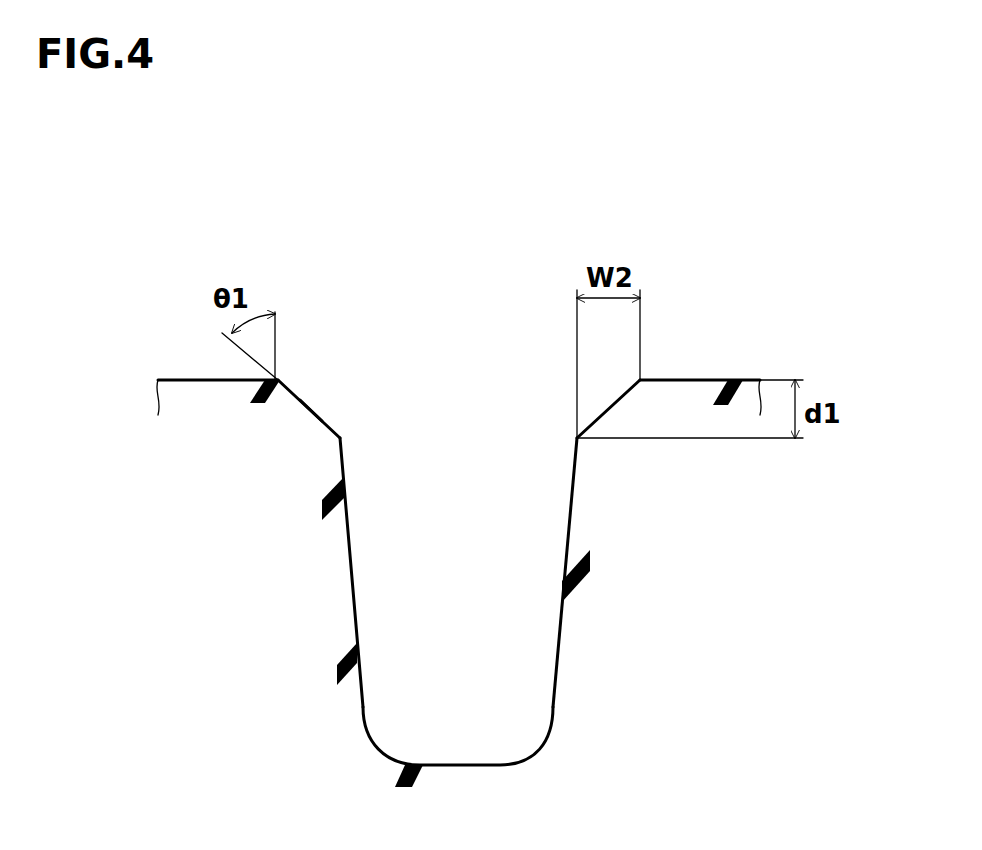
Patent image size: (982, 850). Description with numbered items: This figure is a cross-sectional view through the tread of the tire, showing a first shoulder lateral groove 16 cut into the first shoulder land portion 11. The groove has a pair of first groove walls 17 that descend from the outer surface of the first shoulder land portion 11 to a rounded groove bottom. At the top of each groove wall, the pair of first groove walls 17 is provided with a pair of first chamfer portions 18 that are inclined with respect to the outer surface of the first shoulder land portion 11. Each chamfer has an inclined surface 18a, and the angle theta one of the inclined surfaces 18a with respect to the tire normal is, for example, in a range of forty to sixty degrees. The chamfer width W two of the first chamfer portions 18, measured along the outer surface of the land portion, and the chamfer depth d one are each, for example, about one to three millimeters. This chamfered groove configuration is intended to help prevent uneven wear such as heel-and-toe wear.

The first shoulder land portion 11 is at (692, 380).
The first shoulder lateral groove 16 is at (458, 471).
The first groove walls 17 is at (350, 537).
The first chamfer portions 18 is at (291, 389).
The inclined surfaces 18a is at (318, 413).